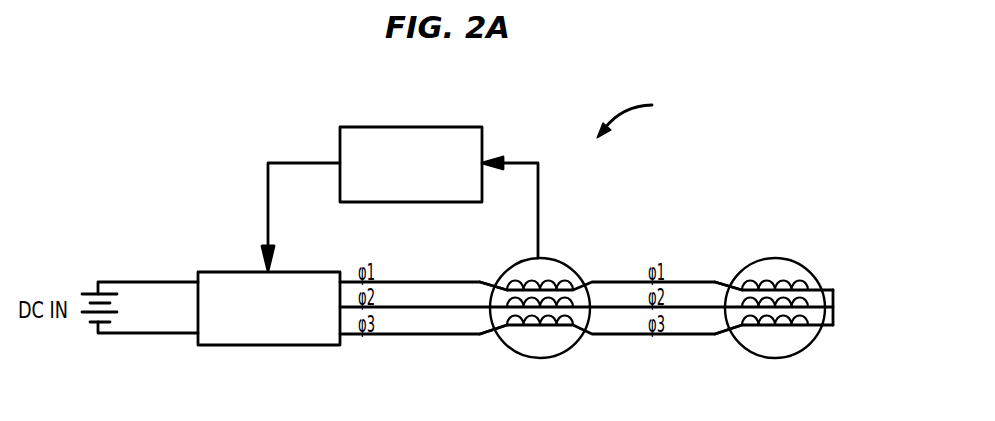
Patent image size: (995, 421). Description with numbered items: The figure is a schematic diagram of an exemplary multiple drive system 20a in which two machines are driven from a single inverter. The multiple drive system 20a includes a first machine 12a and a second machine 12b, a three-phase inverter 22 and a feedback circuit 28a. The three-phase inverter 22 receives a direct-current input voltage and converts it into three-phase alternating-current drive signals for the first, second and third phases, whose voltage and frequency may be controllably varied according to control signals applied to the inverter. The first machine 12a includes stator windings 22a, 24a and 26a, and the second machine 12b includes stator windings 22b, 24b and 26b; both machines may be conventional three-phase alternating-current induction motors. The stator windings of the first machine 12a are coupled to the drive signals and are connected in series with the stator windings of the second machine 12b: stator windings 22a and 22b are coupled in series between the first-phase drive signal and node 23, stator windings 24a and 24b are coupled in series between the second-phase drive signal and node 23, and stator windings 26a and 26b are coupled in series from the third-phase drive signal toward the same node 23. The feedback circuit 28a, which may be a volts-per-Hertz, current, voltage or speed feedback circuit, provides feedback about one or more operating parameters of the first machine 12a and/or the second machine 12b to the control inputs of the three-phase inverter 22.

The multiple drive system 20a is at (642, 115).
The feedback circuit 28a is at (452, 127).
The 3-phase inverter 22 is at (218, 271).
The first machine 12a is at (506, 349).
The second machine 12b is at (742, 347).
The stator winding 22a is at (575, 290).
The stator winding 22b is at (806, 290).
The stator winding 24a is at (505, 290).
The stator winding 24b is at (742, 290).
The stator winding 26a is at (555, 325).
The stator winding 26b is at (793, 323).
The node 23 is at (838, 307).